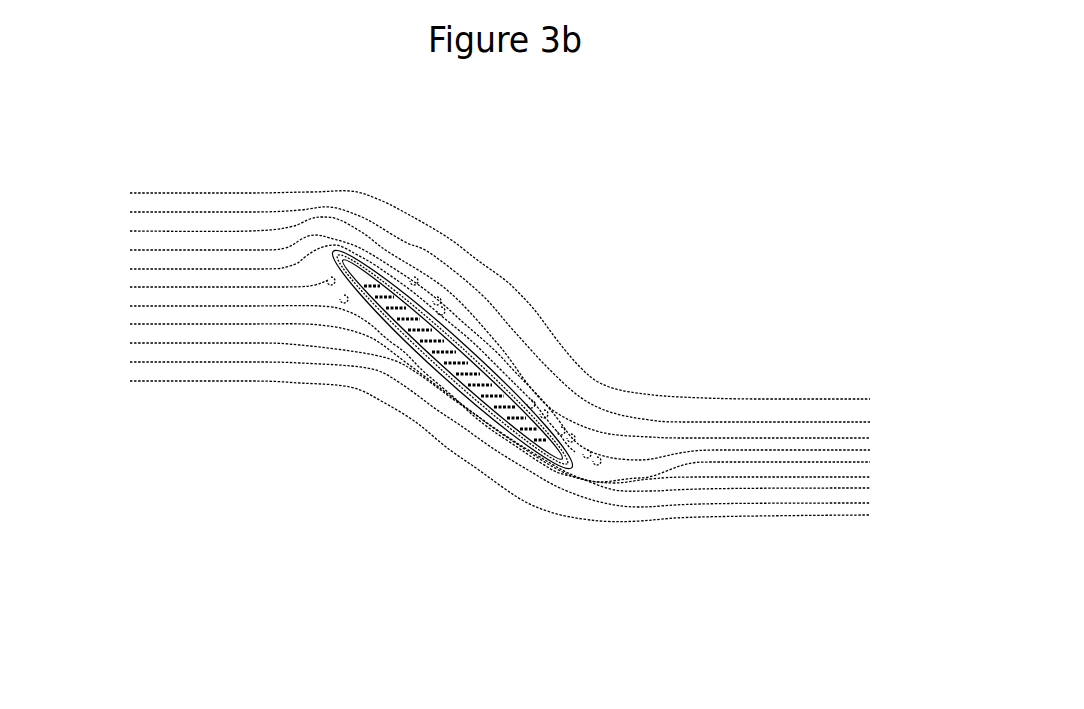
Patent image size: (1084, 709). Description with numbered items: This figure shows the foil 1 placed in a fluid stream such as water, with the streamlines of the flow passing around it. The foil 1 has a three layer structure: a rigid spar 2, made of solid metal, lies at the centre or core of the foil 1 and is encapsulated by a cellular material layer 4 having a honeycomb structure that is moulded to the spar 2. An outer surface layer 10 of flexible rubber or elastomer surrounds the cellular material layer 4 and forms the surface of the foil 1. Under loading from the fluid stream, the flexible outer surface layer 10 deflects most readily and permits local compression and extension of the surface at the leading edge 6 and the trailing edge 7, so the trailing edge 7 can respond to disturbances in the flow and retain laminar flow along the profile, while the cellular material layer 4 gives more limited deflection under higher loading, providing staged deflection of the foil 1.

The foil 1 is at (588, 268).
The rigid spar 2 is at (408, 340).
The cellular material layer 4 is at (460, 402).
The leading edge 6 is at (330, 250).
The trailing edge 7 is at (650, 483).
The outer surface layer 10 is at (553, 467).